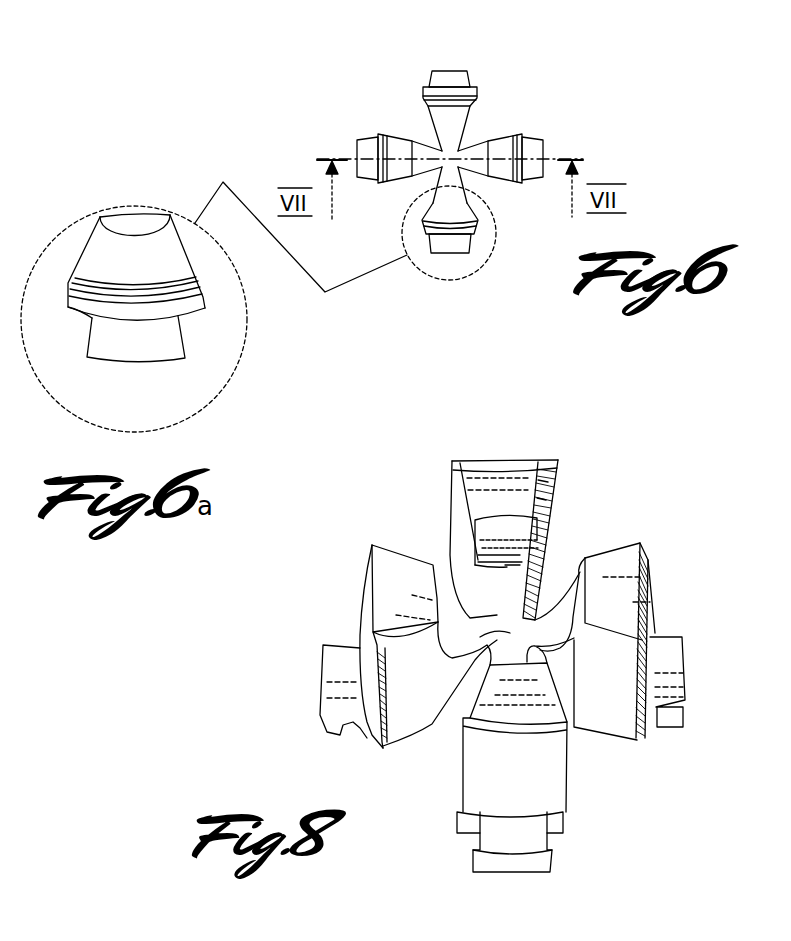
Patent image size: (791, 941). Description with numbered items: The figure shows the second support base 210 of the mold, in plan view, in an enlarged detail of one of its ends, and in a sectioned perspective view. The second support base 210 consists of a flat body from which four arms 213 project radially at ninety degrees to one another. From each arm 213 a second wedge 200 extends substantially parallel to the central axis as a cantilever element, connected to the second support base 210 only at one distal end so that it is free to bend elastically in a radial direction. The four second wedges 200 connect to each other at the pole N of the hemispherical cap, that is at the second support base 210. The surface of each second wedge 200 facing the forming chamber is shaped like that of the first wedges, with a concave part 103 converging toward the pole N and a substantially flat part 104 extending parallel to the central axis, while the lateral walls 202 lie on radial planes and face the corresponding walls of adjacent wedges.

In FIG. 6, the second support base 210 is at (558, 61).
In FIG. 6, the second wedge 200 is at (410, 140).
In FIG. 8, the second wedge 200 is at (502, 470).
In FIG. 6, the lateral wall 202 is at (476, 116).
In FIG. 8, the lateral wall 202 is at (515, 550).
In FIG. 6, the arm 213 is at (348, 138).
In FIG. 8, the arm 213 is at (343, 738).
In FIG. 8, the concave part 103 is at (511, 575).
In FIG. 8, the flat part 104 is at (548, 520).
In FIG. 8, the pole N is at (508, 634).